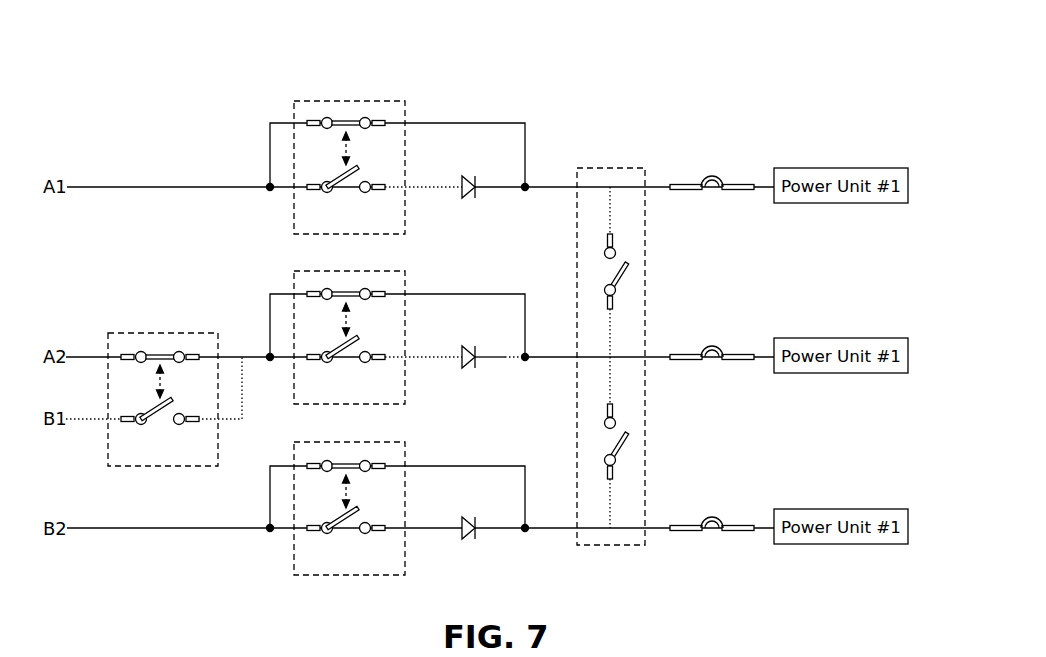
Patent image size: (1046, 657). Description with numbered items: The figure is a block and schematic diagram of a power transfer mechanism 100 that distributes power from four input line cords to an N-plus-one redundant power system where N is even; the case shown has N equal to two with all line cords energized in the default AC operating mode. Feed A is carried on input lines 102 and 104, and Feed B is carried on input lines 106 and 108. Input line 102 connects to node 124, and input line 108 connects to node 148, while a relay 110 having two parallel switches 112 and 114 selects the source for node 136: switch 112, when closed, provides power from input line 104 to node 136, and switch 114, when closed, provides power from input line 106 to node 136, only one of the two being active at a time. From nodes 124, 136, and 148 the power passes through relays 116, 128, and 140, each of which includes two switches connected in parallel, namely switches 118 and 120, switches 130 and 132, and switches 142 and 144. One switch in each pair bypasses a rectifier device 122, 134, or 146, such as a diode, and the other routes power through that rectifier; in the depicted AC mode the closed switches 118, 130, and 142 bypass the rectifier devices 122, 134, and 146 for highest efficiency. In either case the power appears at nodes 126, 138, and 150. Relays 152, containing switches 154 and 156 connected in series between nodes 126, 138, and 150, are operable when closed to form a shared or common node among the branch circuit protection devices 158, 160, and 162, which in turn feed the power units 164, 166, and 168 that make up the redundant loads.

The power transfer mechanism 100 is at (698, 78).
The input line 102 is at (93, 187).
The input line 104 is at (78, 357).
The input line 106 is at (96, 419).
The input line 108 is at (95, 528).
The relay 110 is at (183, 466).
The switch 112 is at (152, 352).
The switch 114 is at (146, 424).
The relay 116 is at (405, 113).
The switch 118 is at (346, 121).
The switch 120 is at (332, 192).
The rectifier device 122 is at (462, 177).
The node 124 is at (269, 186).
The node 126 is at (526, 186).
The relay 128 is at (405, 283).
The switch 130 is at (346, 292).
The switch 132 is at (332, 362).
The rectifier device 134 is at (462, 347).
The node 136 is at (269, 355).
The node 138 is at (525, 361).
The relay 140 is at (405, 453).
The switch 142 is at (346, 464).
The switch 144 is at (332, 533).
The rectifier device 146 is at (462, 517).
The node 148 is at (270, 532).
The node 150 is at (525, 532).
The relays 152 is at (612, 168).
The switch 154 is at (621, 274).
The switch 156 is at (621, 444).
The branch circuit protection device 158 is at (714, 176).
The branch circuit protection device 160 is at (714, 346).
The branch circuit protection device 162 is at (714, 517).
The power unit 164 is at (797, 203).
The power unit 166 is at (797, 373).
The power unit 168 is at (797, 544).